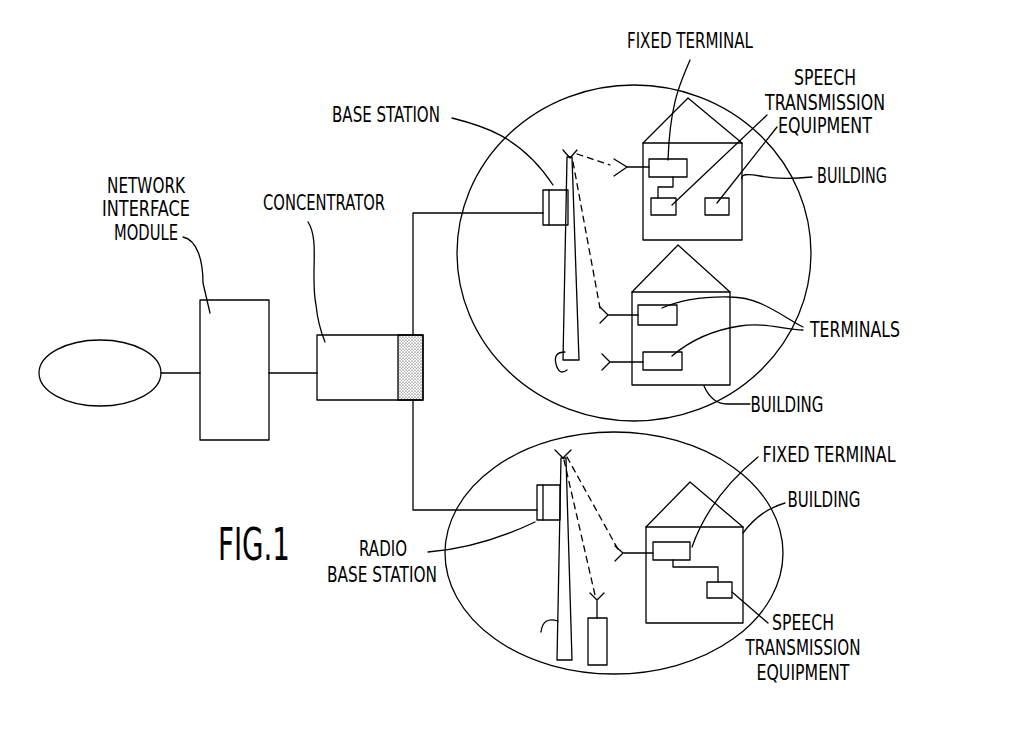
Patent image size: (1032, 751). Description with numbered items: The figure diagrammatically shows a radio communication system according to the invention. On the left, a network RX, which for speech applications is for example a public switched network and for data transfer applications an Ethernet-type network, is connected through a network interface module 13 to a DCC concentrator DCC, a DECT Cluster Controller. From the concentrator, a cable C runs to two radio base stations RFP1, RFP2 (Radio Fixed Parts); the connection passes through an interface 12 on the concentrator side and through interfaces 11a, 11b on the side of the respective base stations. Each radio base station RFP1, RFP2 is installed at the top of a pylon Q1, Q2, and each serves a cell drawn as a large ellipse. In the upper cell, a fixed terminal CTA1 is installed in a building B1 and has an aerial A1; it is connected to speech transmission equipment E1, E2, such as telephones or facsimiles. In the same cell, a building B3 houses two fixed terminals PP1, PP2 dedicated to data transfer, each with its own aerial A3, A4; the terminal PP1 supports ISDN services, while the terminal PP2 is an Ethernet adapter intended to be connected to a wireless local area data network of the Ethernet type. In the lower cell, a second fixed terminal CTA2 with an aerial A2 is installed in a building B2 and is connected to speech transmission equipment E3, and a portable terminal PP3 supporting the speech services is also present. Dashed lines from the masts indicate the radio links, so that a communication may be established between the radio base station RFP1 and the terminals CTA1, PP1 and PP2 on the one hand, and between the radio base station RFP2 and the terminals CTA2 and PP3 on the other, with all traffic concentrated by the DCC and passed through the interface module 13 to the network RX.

The network RX is at (100, 373).
The network interface module 13 is at (250, 300).
The DCC concentrator DCC is at (370, 355).
The interface 12 is at (448, 399).
The cable C is at (413, 261).
The interface 11a is at (557, 189).
The interface 11b is at (537, 484).
The radio base station RFP1 is at (556, 226).
The radio base station RFP2 is at (548, 522).
The pylon Q1 is at (573, 368).
The pylon Q2 is at (540, 634).
The building B1 is at (742, 217).
The building B2 is at (745, 583).
The building B3 is at (730, 374).
The fixed terminal CTA1 is at (650, 158).
The fixed terminal CTA2 is at (653, 541).
The aerial A1 is at (632, 172).
The aerial A2 is at (628, 565).
The aerial A3 is at (621, 322).
The aerial A4 is at (619, 372).
The speech transmission equipment E1 is at (654, 215).
The speech transmission equipment E2 is at (708, 215).
The speech transmission equipment E3 is at (718, 607).
The terminal PP1 is at (675, 327).
The terminal PP2 is at (680, 371).
The portable terminal PP3 is at (626, 661).